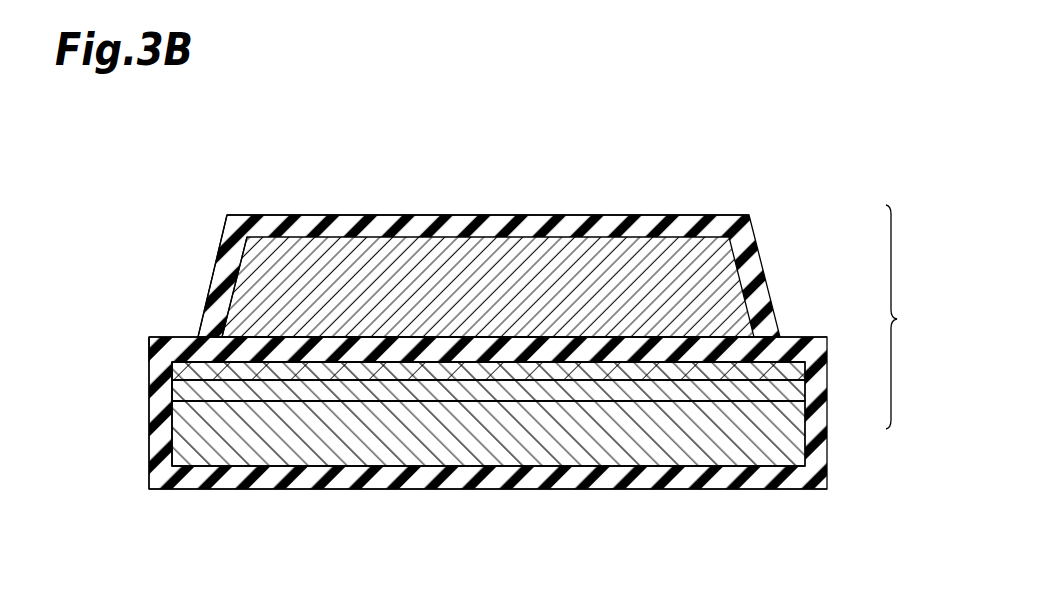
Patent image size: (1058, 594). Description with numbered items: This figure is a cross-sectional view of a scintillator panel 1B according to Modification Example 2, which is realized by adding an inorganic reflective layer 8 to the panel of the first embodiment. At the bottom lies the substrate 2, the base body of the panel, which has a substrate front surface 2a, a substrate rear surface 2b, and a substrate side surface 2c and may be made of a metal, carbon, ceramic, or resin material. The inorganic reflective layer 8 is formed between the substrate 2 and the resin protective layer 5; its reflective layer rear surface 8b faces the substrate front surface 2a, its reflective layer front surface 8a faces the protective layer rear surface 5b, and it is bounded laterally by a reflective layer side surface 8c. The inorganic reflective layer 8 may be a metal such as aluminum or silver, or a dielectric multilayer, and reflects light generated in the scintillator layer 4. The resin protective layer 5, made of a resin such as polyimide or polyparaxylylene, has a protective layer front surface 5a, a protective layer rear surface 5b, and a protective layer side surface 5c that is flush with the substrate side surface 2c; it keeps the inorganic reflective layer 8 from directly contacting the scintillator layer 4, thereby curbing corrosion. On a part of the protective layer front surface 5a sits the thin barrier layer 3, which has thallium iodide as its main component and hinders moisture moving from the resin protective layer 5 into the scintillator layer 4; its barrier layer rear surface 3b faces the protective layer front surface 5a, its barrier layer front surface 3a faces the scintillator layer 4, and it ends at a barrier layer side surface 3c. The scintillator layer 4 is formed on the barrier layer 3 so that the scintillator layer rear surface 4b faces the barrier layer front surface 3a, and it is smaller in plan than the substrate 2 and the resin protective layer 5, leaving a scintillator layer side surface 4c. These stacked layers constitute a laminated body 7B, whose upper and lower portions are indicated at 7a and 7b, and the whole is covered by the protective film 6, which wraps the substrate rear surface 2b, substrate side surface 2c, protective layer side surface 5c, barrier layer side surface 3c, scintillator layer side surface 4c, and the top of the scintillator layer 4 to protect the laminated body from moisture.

The scintillator panel 1B is at (512, 130).
The substrate 2 is at (816, 432).
The substrate front surface 2a is at (339, 402).
The substrate rear surface 2b is at (488, 514).
The substrate side surface 2c is at (163, 430).
The barrier layer 3 is at (757, 350).
The barrier layer front surface 3a is at (653, 352).
The barrier layer rear surface 3b is at (566, 372).
The barrier layer side surface 3c is at (203, 348).
The scintillator layer 4 is at (752, 272).
The scintillator layer rear surface 4b is at (444, 360).
The scintillator layer side surface 4c is at (226, 281).
The resin protective layer 5 is at (814, 367).
The protective layer front surface 5a is at (457, 368).
The protective layer rear surface 5b is at (486, 372).
The protective layer side surface 5c is at (172, 370).
The protective film 6 is at (697, 214).
The first sealing portion 7a is at (343, 237).
The second sealing portion 7b is at (262, 468).
The laminated body 7B is at (908, 317).
The inorganic reflective layer 8 is at (812, 392).
The reflective layer front surface 8a is at (610, 380).
The reflective layer rear surface 8b is at (664, 395).
The reflective layer side surface 8c is at (172, 390).